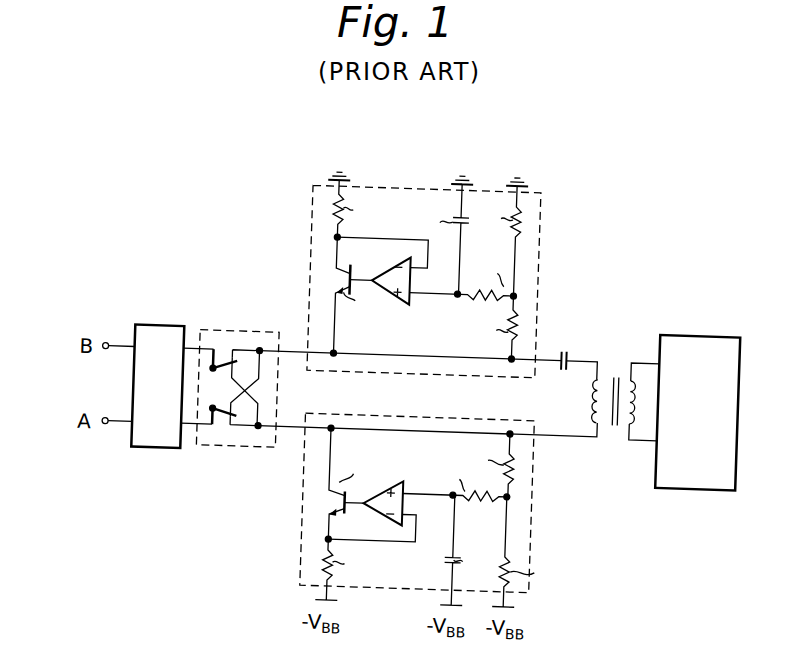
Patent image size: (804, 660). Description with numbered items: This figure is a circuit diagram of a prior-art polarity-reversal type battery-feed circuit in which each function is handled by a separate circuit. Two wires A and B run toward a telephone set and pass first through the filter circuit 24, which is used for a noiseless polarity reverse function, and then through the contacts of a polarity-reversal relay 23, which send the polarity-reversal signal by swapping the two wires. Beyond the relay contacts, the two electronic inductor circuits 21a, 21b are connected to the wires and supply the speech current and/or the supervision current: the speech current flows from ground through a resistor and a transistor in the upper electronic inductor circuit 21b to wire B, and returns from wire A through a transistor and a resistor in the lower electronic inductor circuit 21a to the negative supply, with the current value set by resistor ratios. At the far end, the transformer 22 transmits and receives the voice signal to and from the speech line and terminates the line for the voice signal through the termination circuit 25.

The electronic inductor circuit 21a is at (536, 501).
The electronic inductor circuit 21b is at (534, 256).
The transformer 22 is at (610, 350).
The contacts of a polarity-reversal relay 23 is at (247, 338).
The filter circuit 24 is at (157, 335).
The termination circuit 25 is at (710, 328).